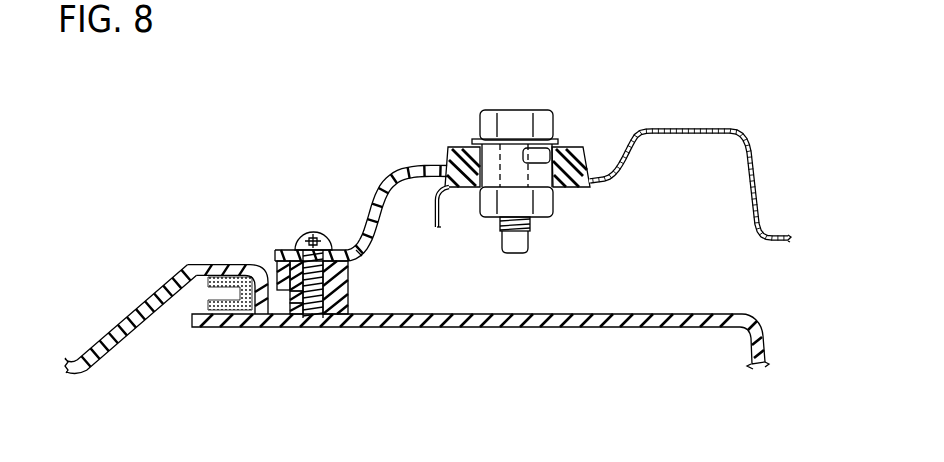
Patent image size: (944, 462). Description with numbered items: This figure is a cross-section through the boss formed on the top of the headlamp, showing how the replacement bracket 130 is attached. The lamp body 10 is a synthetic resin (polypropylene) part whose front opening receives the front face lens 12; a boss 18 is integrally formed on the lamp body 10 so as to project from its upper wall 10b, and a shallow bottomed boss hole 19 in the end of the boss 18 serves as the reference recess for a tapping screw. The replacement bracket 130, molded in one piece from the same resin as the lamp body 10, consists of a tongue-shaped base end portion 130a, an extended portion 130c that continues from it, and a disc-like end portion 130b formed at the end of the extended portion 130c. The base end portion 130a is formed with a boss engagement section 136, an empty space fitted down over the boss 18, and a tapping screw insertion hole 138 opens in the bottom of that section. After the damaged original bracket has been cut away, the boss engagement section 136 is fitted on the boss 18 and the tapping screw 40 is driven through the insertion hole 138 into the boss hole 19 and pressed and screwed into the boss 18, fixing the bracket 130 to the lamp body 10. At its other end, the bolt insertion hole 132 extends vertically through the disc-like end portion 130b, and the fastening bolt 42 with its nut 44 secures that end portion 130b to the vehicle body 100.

The lamp body 10 is at (547, 333).
The upper wall 10b is at (670, 313).
The front face lens 12 is at (130, 316).
The boss 18 is at (292, 308).
The boss hole 19 is at (295, 290).
The tapping screw 40 is at (313, 232).
The bolt 42 is at (547, 125).
The nut 44 is at (552, 203).
The vehicle body 100 is at (690, 128).
The replacement bracket 130 is at (397, 170).
The tongue-shaped base end portion 130a is at (287, 250).
The disc-like end portion 130b is at (465, 153).
The extended portion 130c is at (366, 213).
The bolt insertion hole 132 is at (533, 157).
The boss engagement section 136 is at (330, 298).
The tapping screw insertion hole 138 is at (295, 260).